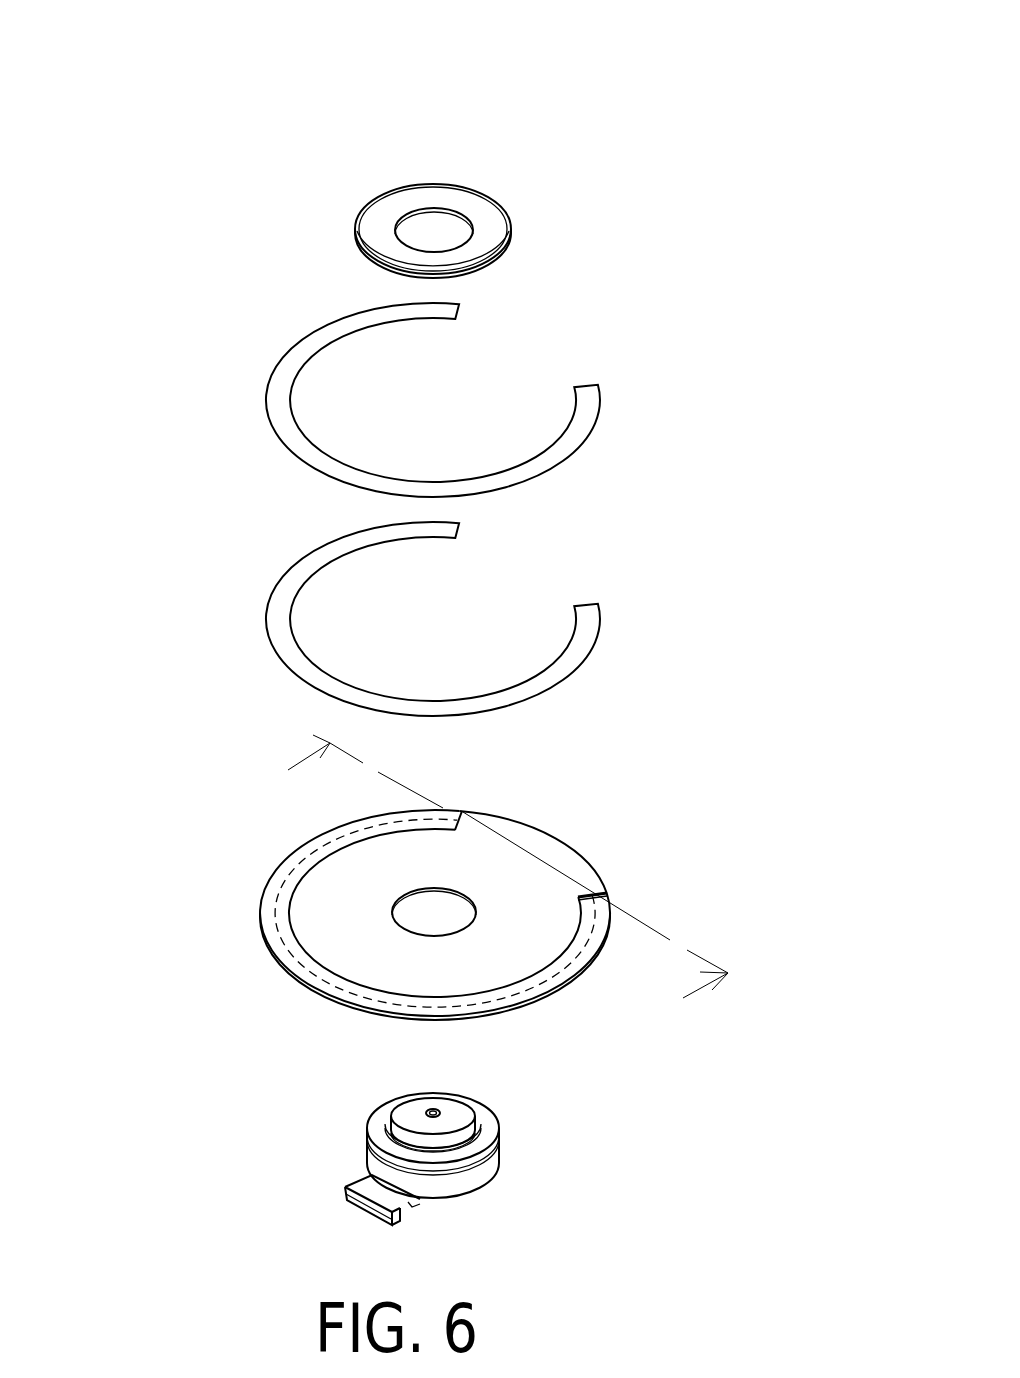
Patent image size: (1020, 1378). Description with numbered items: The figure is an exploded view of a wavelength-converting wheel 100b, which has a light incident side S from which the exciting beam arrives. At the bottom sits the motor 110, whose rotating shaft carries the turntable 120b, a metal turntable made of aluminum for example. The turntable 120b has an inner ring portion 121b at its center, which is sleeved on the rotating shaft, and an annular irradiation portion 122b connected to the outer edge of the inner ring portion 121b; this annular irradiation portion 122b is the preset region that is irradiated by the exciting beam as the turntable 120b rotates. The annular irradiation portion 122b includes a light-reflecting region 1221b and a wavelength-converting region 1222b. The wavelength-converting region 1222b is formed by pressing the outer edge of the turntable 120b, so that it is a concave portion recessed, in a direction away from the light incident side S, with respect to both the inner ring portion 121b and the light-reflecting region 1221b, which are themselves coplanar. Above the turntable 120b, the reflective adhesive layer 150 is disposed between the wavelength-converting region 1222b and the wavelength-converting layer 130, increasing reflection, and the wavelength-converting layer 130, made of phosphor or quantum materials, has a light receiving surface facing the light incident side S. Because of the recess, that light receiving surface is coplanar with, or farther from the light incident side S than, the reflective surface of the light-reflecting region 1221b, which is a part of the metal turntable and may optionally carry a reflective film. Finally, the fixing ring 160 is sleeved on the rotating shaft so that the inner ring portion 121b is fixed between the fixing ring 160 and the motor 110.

The wavelength-converting wheel 100b is at (212, 39).
The light incident side S is at (267, 258).
The fixing ring 160 is at (493, 228).
The wavelength-converting layer 130 is at (285, 423).
The reflective adhesive layer 150 is at (280, 615).
The turntable 120b is at (434, 978).
The inner ring portion 121b is at (305, 955).
The annular irradiation portion 122b is at (434, 915).
The light-reflecting region 1221b is at (573, 870).
The wavelength-converting region 1222b is at (293, 875).
The motor 110 is at (475, 1178).